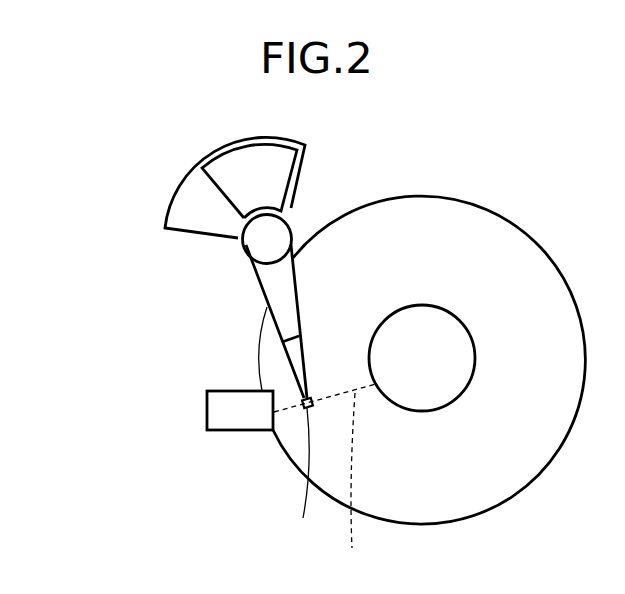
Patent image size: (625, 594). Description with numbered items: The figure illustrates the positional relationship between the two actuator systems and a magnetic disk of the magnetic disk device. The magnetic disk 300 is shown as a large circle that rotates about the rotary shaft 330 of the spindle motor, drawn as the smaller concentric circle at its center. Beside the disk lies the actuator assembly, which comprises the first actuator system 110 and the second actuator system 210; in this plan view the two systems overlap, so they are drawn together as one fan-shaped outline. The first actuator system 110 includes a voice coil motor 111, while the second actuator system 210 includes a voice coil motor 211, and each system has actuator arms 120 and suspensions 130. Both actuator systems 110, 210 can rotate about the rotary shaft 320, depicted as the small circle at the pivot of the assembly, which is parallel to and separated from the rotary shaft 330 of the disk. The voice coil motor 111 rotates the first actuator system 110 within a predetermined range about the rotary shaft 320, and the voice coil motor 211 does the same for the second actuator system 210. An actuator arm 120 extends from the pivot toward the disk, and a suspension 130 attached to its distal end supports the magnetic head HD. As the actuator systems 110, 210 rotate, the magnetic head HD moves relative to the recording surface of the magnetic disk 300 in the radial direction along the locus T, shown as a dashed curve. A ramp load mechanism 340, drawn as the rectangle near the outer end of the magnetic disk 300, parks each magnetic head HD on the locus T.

The first actuator system 110 is at (173, 187).
The second actuator system 210 is at (195, 173).
The voice coil motor 111 is at (169, 181).
The voice coil motor 211 is at (242, 193).
The actuator arm 120 is at (285, 311).
The suspension 130 is at (293, 352).
The magnetic disk 300 is at (487, 208).
The rotary shaft 320 is at (258, 247).
The rotary shaft 330 is at (422, 335).
The ramp load mechanism 340 is at (240, 431).
The magnetic head HD is at (308, 471).
The locus T is at (325, 478).